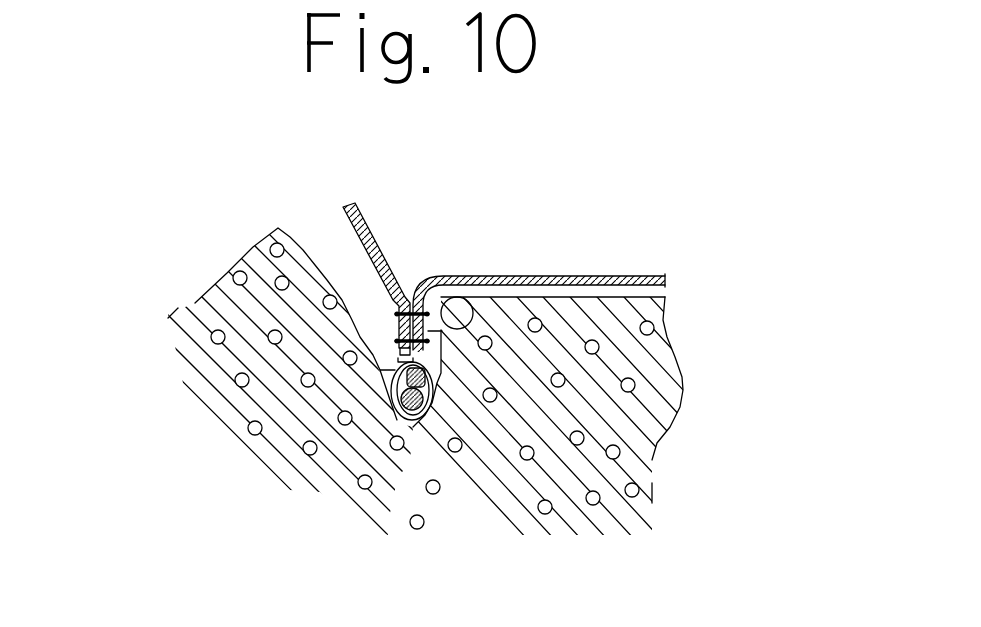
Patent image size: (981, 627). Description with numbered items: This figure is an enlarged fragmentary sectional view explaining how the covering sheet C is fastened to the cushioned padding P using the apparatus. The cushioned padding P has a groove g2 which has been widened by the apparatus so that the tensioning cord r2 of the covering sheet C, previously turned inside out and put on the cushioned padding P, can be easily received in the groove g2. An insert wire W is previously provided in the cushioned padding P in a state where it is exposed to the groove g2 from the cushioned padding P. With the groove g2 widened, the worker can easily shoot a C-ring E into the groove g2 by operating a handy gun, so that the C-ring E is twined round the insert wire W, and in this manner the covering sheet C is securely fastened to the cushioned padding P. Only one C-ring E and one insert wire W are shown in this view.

The cushioned padding P is at (257, 242).
The covering sheet C is at (378, 242).
The tensioning cord r2 is at (472, 300).
The groove g2 is at (384, 352).
The insert wire W is at (393, 413).
The C-ring E is at (413, 427).